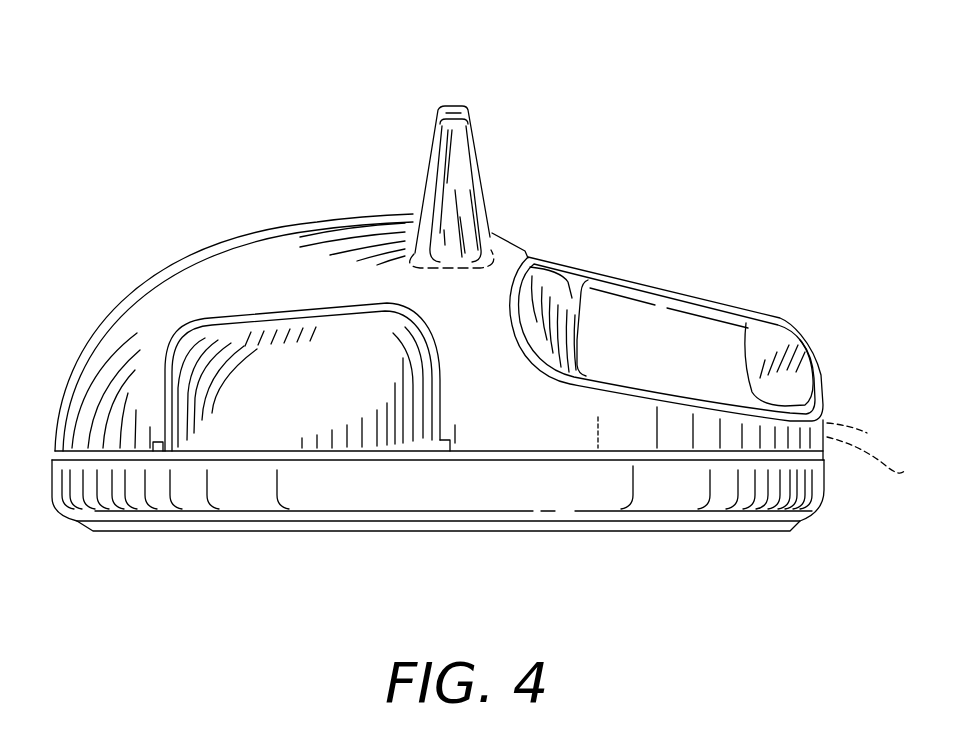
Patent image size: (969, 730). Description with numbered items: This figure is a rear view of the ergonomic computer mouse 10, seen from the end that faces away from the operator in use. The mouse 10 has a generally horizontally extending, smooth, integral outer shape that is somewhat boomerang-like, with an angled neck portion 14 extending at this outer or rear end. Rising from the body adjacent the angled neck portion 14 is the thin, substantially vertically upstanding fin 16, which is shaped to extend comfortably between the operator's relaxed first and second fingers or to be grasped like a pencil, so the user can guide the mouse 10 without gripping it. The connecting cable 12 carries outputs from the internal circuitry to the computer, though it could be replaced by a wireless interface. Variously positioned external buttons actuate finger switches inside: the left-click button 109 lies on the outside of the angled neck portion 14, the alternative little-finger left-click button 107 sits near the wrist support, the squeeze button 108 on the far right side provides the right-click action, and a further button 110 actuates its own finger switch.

The mouse 10 is at (222, 129).
The cable 12 is at (867, 433).
The angled neck portion 14 is at (517, 248).
The fin 16 is at (433, 157).
The button 107 is at (82, 353).
The squeeze button 108 is at (262, 418).
The button 109 is at (678, 320).
The button 110 is at (746, 323).